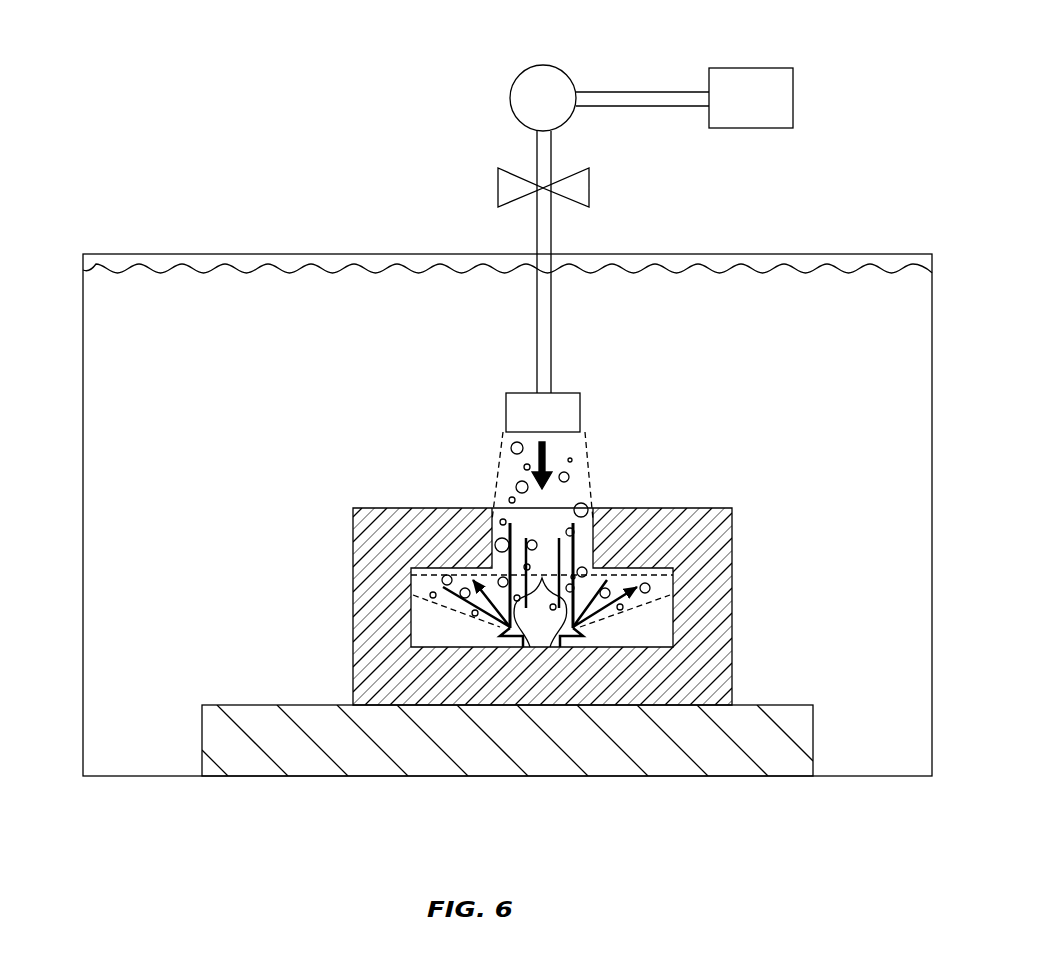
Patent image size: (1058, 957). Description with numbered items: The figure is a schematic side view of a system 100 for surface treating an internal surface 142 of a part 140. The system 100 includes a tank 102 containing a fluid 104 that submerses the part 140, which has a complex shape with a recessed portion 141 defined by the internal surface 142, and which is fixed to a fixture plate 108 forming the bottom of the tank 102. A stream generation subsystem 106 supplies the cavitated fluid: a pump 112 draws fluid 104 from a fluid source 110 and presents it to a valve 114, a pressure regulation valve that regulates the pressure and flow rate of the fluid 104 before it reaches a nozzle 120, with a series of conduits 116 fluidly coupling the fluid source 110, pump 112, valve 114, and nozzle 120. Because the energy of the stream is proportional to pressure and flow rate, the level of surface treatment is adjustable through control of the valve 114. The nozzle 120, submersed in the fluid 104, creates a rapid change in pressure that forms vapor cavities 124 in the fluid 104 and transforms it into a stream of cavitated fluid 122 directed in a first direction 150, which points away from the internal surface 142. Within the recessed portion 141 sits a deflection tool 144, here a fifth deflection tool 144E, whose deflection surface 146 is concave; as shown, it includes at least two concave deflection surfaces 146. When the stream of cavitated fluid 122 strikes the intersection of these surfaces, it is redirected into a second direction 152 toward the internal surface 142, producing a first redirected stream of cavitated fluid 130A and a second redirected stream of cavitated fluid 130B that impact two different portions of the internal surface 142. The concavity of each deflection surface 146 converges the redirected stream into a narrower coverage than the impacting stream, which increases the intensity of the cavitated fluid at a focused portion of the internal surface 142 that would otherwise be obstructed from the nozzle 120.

The system 100 is at (862, 201).
The tank 102 is at (83, 449).
The fluid 104 is at (250, 266).
The stream generation subsystem 106 is at (456, 90).
The fixture plate 108 is at (222, 705).
The fluid source 110 is at (793, 78).
The pump 112 is at (557, 66).
The valve 114 is at (498, 188).
The conduits 116 is at (622, 92).
The nozzle 120 is at (562, 392).
The stream of cavitated fluid 122 is at (497, 452).
The vapor cavities 124 is at (569, 477).
The first redirected stream of cavitated fluid 130A is at (413, 632).
The second redirected stream of cavitated fluid 130B is at (619, 620).
The part 140 is at (352, 572).
The recessed portion 141 is at (666, 628).
The internal surface 142 is at (468, 620).
The deflection tool 144 is at (508, 644).
The fifth deflection tool 144E is at (560, 650).
The deflection surface 146 is at (538, 646).
The first direction 150 is at (553, 462).
The second direction 152 is at (540, 522).